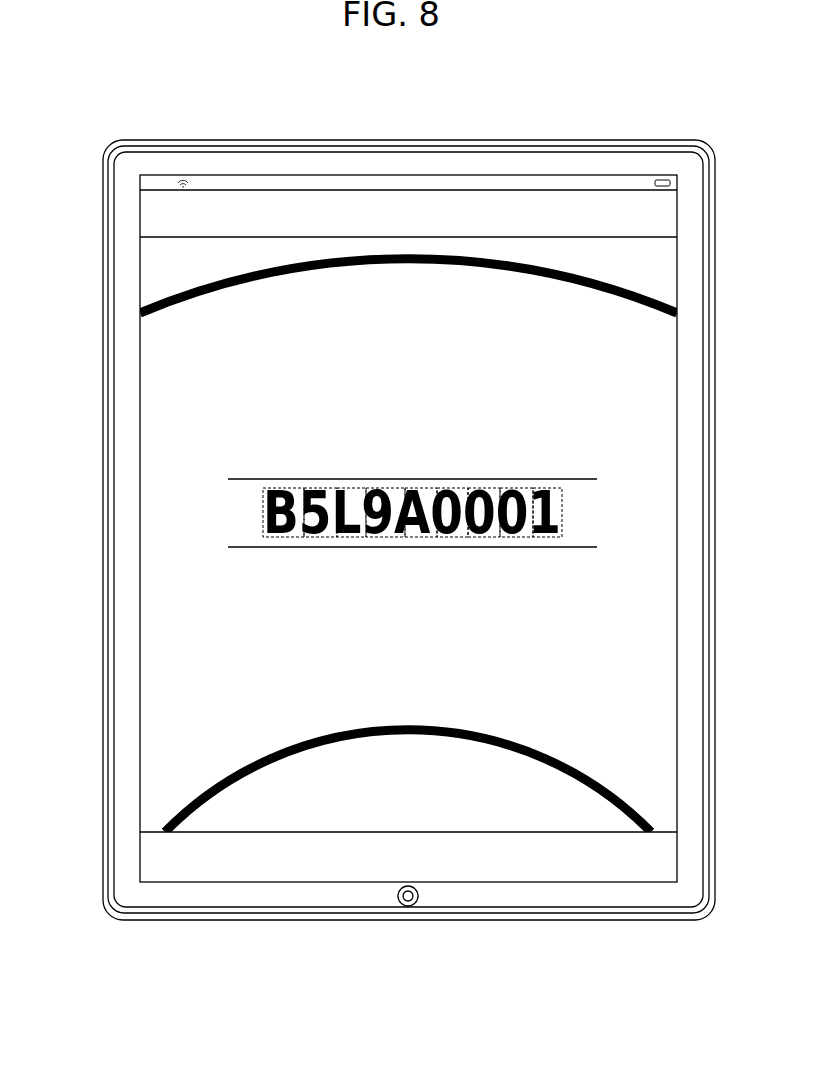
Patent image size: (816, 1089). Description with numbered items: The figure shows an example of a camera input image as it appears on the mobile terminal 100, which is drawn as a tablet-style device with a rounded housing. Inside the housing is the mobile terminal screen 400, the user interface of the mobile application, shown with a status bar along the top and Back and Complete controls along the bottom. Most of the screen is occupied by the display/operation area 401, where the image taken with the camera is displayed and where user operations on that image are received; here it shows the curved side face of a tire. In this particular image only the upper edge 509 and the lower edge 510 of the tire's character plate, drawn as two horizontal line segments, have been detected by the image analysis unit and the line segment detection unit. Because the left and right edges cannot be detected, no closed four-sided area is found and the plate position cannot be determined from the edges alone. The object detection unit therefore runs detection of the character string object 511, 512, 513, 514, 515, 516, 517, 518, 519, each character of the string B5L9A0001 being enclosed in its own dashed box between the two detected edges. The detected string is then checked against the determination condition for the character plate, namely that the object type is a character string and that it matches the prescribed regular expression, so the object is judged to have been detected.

The mobile terminal 100 is at (187, 139).
The mobile terminal screen 400 is at (277, 180).
The display/operation area 401 is at (170, 360).
The upper edge 509 is at (240, 478).
The lower edge 510 is at (240, 549).
The character string object 511 is at (281, 540).
The character string object 512 is at (322, 540).
The character string object 513 is at (350, 540).
The character string object 514 is at (383, 540).
The character string object 515 is at (418, 540).
The character string object 516 is at (452, 540).
The character string object 517 is at (484, 540).
The character string object 518 is at (518, 540).
The character string object 519 is at (550, 540).